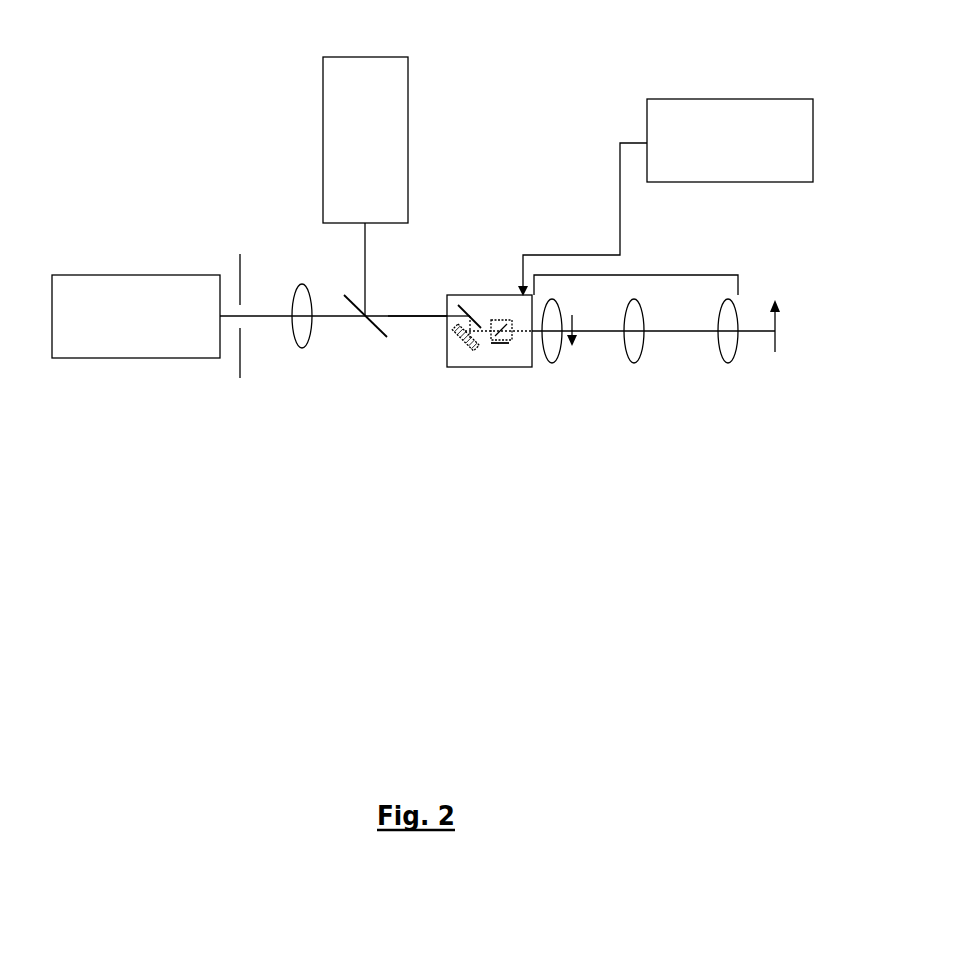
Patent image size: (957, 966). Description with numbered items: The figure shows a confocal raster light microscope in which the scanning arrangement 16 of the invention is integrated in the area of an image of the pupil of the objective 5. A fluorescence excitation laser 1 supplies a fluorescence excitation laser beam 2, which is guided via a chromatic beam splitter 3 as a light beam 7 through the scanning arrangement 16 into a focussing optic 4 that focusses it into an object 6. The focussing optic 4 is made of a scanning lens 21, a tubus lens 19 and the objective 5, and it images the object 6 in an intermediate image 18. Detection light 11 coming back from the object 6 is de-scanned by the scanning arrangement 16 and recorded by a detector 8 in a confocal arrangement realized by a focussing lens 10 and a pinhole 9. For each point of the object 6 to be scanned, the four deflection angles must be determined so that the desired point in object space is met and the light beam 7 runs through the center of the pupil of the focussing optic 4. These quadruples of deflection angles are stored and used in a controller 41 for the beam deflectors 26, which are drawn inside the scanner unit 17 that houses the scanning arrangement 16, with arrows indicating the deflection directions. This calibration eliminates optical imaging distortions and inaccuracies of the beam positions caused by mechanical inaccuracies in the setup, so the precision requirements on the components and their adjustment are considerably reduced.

The fluorescence excitation laser 1 is at (408, 120).
The fluorescence excitation laser beam 2 is at (365, 277).
The chromatic beam splitter 3 is at (392, 318).
The focussing optic 4 is at (643, 268).
The objective 5 is at (727, 363).
The object 6 is at (776, 352).
The light beam 7 is at (410, 320).
The detector 8 is at (118, 358).
The pinhole 9 is at (238, 378).
The focussing lens 10 is at (301, 349).
The detection light 11 is at (333, 318).
The scanning arrangement 16 is at (462, 340).
The scanning unit 17 is at (484, 335).
The intermediate image 18 is at (574, 346).
The tubus lens 19 is at (634, 363).
The scanning lens 21 is at (552, 363).
The beam deflectors 26 is at (467, 299).
The controller 41 is at (718, 99).